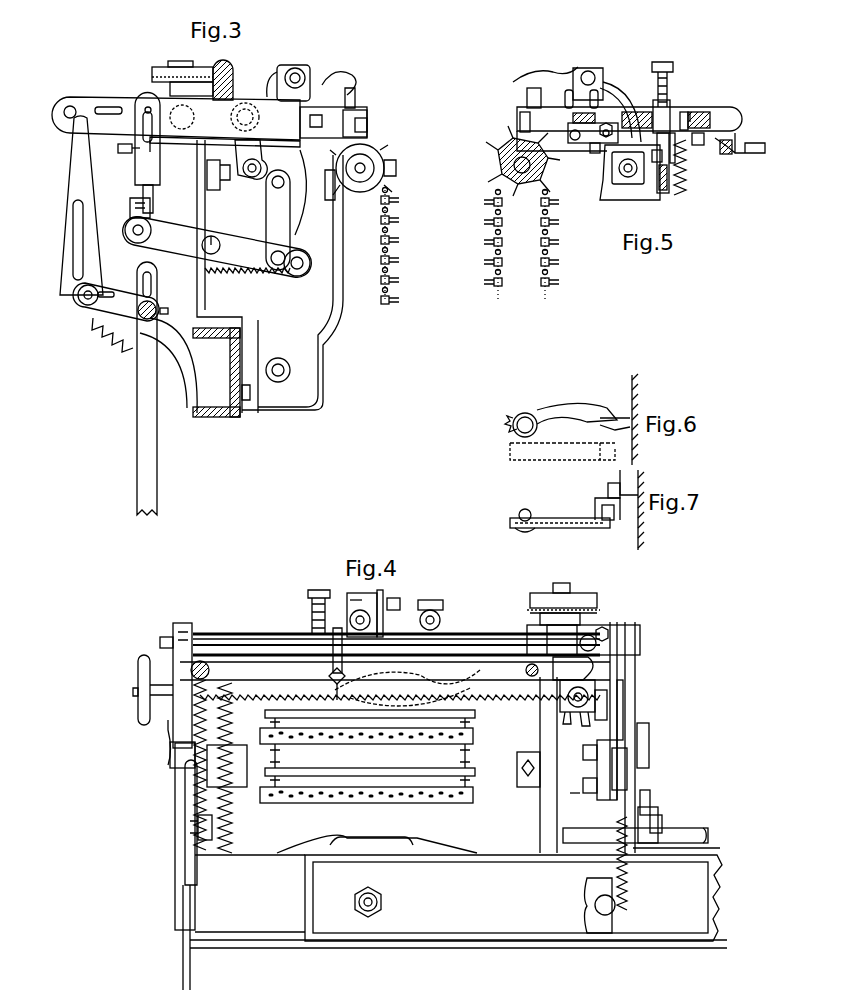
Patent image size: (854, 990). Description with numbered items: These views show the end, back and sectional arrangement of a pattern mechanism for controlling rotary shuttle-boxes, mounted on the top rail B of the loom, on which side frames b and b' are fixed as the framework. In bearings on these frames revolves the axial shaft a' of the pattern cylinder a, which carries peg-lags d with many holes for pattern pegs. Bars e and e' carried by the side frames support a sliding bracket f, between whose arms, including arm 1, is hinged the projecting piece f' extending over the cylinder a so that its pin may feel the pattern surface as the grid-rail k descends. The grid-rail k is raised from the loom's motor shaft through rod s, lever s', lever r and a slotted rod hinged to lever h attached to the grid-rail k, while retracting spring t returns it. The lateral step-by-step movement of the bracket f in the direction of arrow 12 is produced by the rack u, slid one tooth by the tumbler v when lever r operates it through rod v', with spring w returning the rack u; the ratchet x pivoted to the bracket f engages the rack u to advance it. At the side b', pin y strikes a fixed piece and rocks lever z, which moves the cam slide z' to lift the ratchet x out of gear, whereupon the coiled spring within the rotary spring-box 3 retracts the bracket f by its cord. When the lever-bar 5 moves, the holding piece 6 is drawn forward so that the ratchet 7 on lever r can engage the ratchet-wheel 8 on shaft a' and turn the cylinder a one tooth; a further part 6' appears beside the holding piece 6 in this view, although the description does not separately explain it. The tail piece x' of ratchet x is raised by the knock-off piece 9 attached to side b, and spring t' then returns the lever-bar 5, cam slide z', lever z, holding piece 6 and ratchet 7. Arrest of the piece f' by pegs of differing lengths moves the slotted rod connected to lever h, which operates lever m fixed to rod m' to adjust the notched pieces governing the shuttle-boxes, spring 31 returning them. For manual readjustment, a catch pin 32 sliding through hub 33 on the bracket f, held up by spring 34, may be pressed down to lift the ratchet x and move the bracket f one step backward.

In FIG. 3, the spring-box 3 is at (162, 70).
In FIG. 4, the spring-box 3 is at (590, 598).
In FIG. 3, the sliding bracket f is at (232, 72).
In FIG. 5, the sliding bracket f is at (691, 95).
In FIG. 6, the sliding bracket f is at (526, 410).
In FIG. 7, the sliding bracket f is at (525, 507).
In FIG. 3, the lever h is at (132, 106).
In FIG. 4, the lever h is at (613, 638).
In FIG. 3, the lever z is at (309, 69).
In FIG. 5, the lever z is at (575, 65).
In FIG. 4, the lever z is at (356, 606).
In FIG. 3, the grid-rail k is at (304, 112).
In FIG. 5, the grid-rail k is at (583, 128).
In FIG. 3, the pin y is at (345, 100).
In FIG. 5, the pin y is at (528, 82).
In FIG. 3, the projecting piece f' is at (380, 109).
In FIG. 5, the projecting piece f' is at (559, 70).
In FIG. 4, the projecting piece f' is at (410, 601).
In FIG. 3, the lever-bar 5 is at (155, 150).
In FIG. 5, the lever-bar 5 is at (748, 150).
In FIG. 4, the lever-bar 5 is at (395, 670).
In FIG. 3, the holding piece 6 is at (232, 176).
In FIG. 3, the lever r is at (217, 247).
In FIG. 4, the lever r is at (598, 770).
In FIG. 3, the lever s' is at (129, 226).
In FIG. 4, the lever s' is at (218, 792).
In FIG. 3, the tumbler v is at (247, 159).
In FIG. 4, the tumbler v is at (607, 688).
In FIG. 3, the rack u is at (218, 185).
In FIG. 5, the rack u is at (667, 190).
In FIG. 4, the rack u is at (505, 712).
In FIG. 3, the rod v' is at (288, 223).
In FIG. 4, the rod v' is at (638, 710).
In FIG. 3, the ratchet 7 is at (300, 230).
In FIG. 3, the side frame b is at (270, 276).
In FIG. 6, the side frame b is at (641, 419).
In FIG. 7, the side frame b is at (636, 511).
In FIG. 4, the side frame b is at (537, 765).
In FIG. 3, the ratchet-wheel 8 is at (382, 158).
In FIG. 3, the axial shaft a' is at (396, 167).
In FIG. 5, the axial shaft a' is at (522, 194).
In FIG. 3, the guide stop 6' is at (344, 204).
In FIG. 3, the peg-lags d is at (380, 290).
In FIG. 5, the peg-lags d is at (500, 280).
In FIG. 3, the lever m is at (120, 317).
In FIG. 4, the lever m is at (664, 817).
In FIG. 3, the spring 31 is at (95, 325).
In FIG. 4, the spring 31 is at (613, 870).
In FIG. 3, the top rail B is at (218, 420).
In FIG. 4, the top rail B is at (458, 901).
In FIG. 3, the rod s is at (160, 388).
In FIG. 4, the rod s is at (157, 866).
In FIG. 5, the bar e is at (629, 113).
In FIG. 5, the bar e' is at (710, 102).
In FIG. 4, the bar e' is at (396, 626).
In FIG. 5, the catch pin 32 is at (658, 62).
In FIG. 4, the catch pin 32 is at (315, 590).
In FIG. 5, the hub 33 is at (690, 115).
In FIG. 4, the hub 33 is at (313, 630).
In FIG. 5, the spring 34 is at (672, 111).
In FIG. 5, the arm 1 is at (615, 97).
In FIG. 5, the pattern cylinder a is at (509, 161).
In FIG. 5, the bracket g is at (642, 160).
In FIG. 5, the cam slide z' is at (694, 166).
In FIG. 4, the cam slide z' is at (328, 624).
In FIG. 5, the spring t' is at (696, 188).
In FIG. 4, the spring t' is at (165, 693).
In FIG. 5, the ratchet x is at (724, 157).
In FIG. 6, the ratchet x is at (563, 422).
In FIG. 7, the ratchet x is at (560, 505).
In FIG. 4, the ratchet x is at (379, 656).
In FIG. 6, the knock-off piece 9 is at (612, 418).
In FIG. 7, the knock-off piece 9 is at (600, 503).
In FIG. 4, the knock-off piece 9 is at (515, 685).
In FIG. 7, the tail piece x' is at (606, 540).
In FIG. 4, the side frame b' is at (140, 690).
In FIG. 4, the retracting spring t is at (218, 766).
In FIG. 4, the spring w is at (165, 773).
In FIG. 4, the arrow 12 is at (771, 700).
In FIG. 4, the rod m' is at (641, 824).